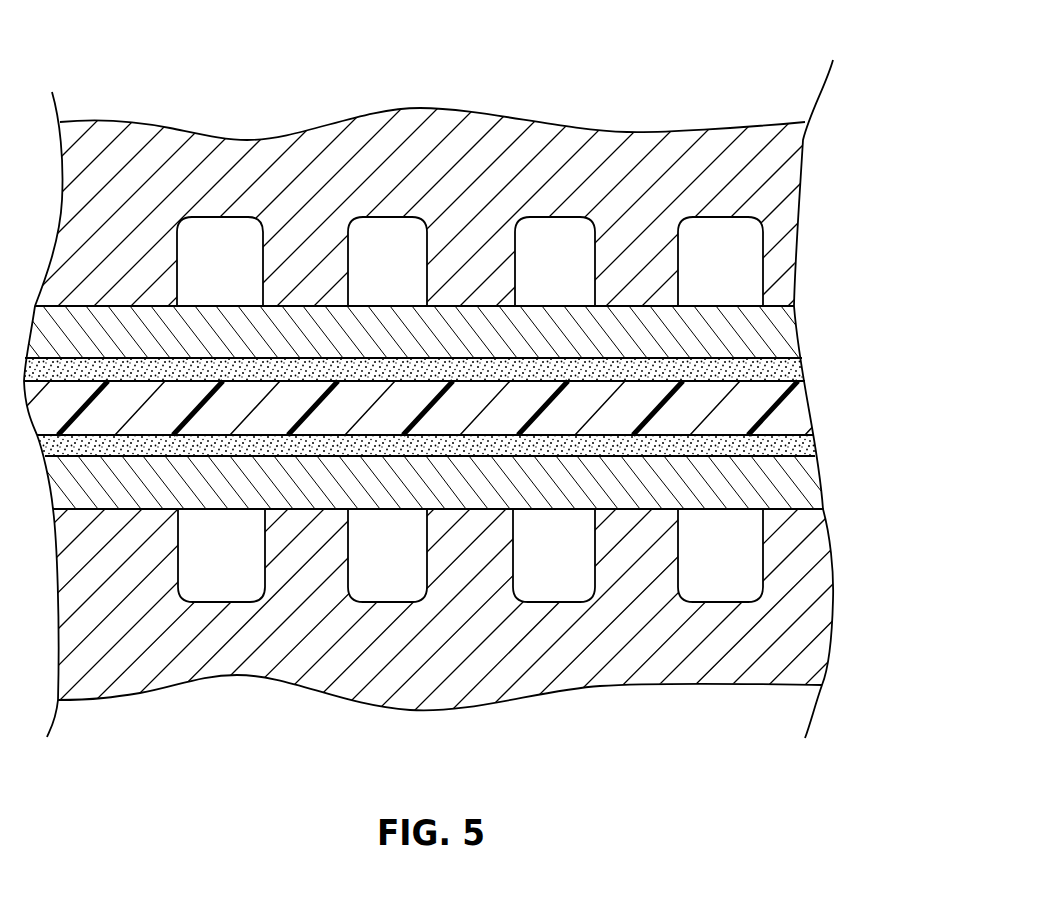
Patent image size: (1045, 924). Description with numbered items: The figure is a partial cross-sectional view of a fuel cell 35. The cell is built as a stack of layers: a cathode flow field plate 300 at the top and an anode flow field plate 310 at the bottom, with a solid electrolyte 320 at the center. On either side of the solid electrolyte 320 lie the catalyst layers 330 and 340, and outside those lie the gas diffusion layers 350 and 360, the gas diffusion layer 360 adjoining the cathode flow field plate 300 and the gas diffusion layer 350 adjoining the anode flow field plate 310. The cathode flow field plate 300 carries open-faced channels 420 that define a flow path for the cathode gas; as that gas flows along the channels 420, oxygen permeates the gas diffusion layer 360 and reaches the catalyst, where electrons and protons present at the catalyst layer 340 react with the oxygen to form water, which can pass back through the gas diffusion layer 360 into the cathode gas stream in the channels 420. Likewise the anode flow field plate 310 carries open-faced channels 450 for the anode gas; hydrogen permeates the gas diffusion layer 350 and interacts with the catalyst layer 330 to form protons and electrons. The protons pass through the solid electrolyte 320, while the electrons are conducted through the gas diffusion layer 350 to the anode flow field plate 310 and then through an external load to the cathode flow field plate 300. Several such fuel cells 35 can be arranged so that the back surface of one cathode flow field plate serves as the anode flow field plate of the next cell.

The fuel cell 35 is at (621, 67).
The cathode flow field plate 300 is at (418, 135).
The anode flow field plate 310 is at (611, 652).
The solid electrolyte 320 is at (790, 406).
The catalyst layer 330 is at (802, 447).
The catalyst layer 340 is at (790, 370).
The gas diffusion layer 350 is at (802, 492).
The gas diffusion layer 360 is at (770, 325).
The open-faced channels 420 is at (354, 208).
The open-faced channels 450 is at (367, 612).